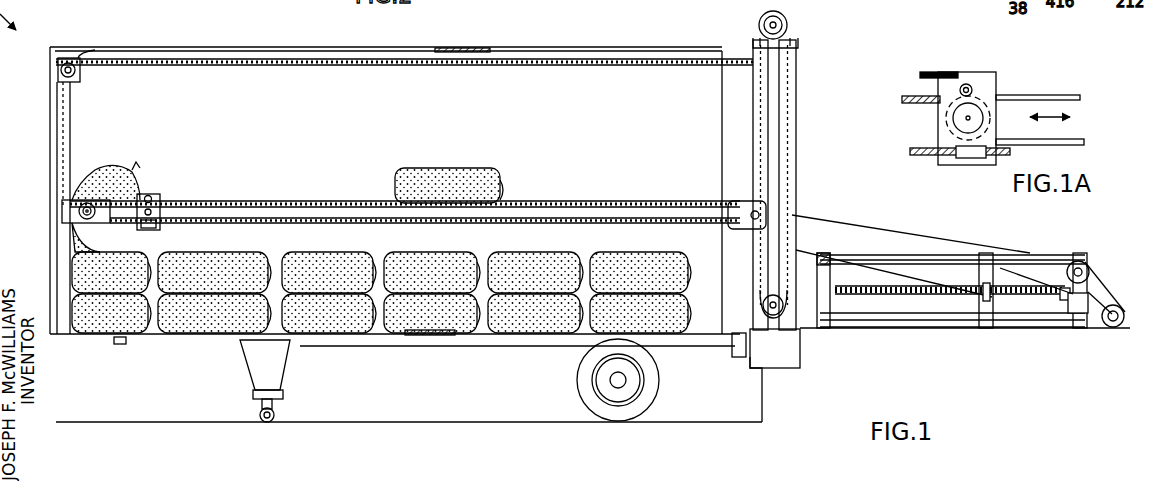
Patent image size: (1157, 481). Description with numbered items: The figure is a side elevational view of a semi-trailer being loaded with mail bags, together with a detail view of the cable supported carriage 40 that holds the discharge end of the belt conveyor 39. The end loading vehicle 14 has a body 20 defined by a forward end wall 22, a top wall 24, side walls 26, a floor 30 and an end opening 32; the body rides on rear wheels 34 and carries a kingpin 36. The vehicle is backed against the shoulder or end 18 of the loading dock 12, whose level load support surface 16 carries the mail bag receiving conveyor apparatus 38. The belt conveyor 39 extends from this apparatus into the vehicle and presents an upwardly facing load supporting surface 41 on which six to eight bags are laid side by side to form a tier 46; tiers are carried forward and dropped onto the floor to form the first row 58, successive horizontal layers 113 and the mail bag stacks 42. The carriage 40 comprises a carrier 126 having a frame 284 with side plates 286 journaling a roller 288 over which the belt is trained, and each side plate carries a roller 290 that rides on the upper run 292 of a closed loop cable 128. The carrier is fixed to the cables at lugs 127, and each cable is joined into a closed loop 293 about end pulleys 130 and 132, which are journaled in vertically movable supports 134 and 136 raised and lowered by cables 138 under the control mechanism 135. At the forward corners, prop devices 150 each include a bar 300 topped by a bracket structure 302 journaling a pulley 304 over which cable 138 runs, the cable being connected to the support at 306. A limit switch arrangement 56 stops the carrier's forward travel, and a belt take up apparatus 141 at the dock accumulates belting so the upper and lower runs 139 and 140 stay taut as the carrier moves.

In FIG. 1, the loading dock 12 is at (1010, 345).
In FIG. 1, the end loading vehicle 14 is at (672, 45).
In FIG. 1, the load support surface 16 is at (800, 324).
In FIG. 1, the dock shoulder or end 18 is at (746, 366).
In FIG. 1, the vehicle body 20 is at (620, 50).
In FIG. 1, the forward end wall 22 is at (54, 258).
In FIG. 1, the top wall 24 is at (480, 50).
In FIG. 1, the side wall 26 is at (535, 75).
In FIG. 1, the floor 30 is at (440, 336).
In FIG. 1, the end opening 32 is at (728, 91).
In FIG. 1, the rear wheels 34 is at (574, 384).
In FIG. 1, the kingpin 36 is at (120, 344).
In FIG. 1, the mail bag receiving conveyor apparatus 38 is at (1057, 345).
In FIG. 1, the belt conveyor 39 is at (305, 201).
In FIG. 1A, the belt conveyor 39 is at (1072, 95).
In FIG. 1, the carriage 40 is at (168, 185).
In FIG. 1, the load supporting surface 41 is at (963, 242).
In FIG. 1, the mail bag stack 42 is at (97, 326).
In FIG. 1, the tier 46 is at (506, 168).
In FIG. 1A, the limit switch arrangement 56 is at (915, 72).
In FIG. 1, the first row of mail bags 58 is at (80, 302).
In FIG. 1, the bag layer 113 is at (692, 274).
In FIG. 1, the carrier 126 is at (160, 184).
In FIG. 1, the lugs 127 is at (160, 228).
In FIG. 1, the cables 128 is at (265, 210).
In FIG. 1, the end pulley 130 is at (100, 186).
In FIG. 1, the end pulley 132 is at (742, 230).
In FIG. 1, the vertically movable support 134 is at (80, 196).
In FIG. 1, the control mechanism 135 is at (830, 0).
In FIG. 1, the vertically movable support 136 is at (750, 203).
In FIG. 1, the cables 138 is at (610, 62).
In FIG. 1, the belt upper run 139 is at (540, 212).
In FIG. 1, the belt lower run 140 is at (555, 212).
In FIG. 1, the belt take up apparatus 141 is at (968, 333).
In FIG. 1, the prop device 150 is at (78, 98).
In FIG. 1A, the frame 284 is at (1000, 80).
In FIG. 1, the side plates 286 is at (200, 204).
In FIG. 1A, the side plates 286 is at (966, 72).
In FIG. 1A, the roller 288 is at (940, 124).
In FIG. 1, the roller 290 is at (147, 195).
In FIG. 1A, the roller 290 is at (972, 86).
In FIG. 1, the cable upper run 292 is at (363, 203).
In FIG. 1, the closed loop 293 is at (430, 230).
In FIG. 1, the post member or bar 300 is at (68, 120).
In FIG. 1, the bracket structure 302 is at (84, 50).
In FIG. 1, the pulley 304 is at (64, 58).
In FIG. 1, the cable connection 306 is at (62, 214).